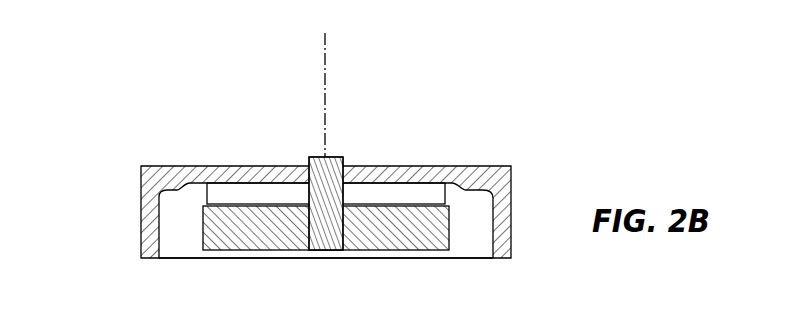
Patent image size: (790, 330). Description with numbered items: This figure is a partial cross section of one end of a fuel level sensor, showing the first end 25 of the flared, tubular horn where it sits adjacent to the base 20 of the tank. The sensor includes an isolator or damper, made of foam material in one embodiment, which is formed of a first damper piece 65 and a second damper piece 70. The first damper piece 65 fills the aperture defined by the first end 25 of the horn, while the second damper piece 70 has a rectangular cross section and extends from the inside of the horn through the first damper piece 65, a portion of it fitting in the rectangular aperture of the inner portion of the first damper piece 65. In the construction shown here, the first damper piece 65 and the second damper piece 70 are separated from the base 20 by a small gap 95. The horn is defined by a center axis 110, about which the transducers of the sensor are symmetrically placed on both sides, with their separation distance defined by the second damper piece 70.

The first end 25 is at (138, 60).
The base 20 is at (245, 259).
The small gap 95 is at (198, 252).
The first damper piece 65 is at (450, 221).
The second damper piece 70 is at (330, 238).
The center axis 110 is at (333, 118).